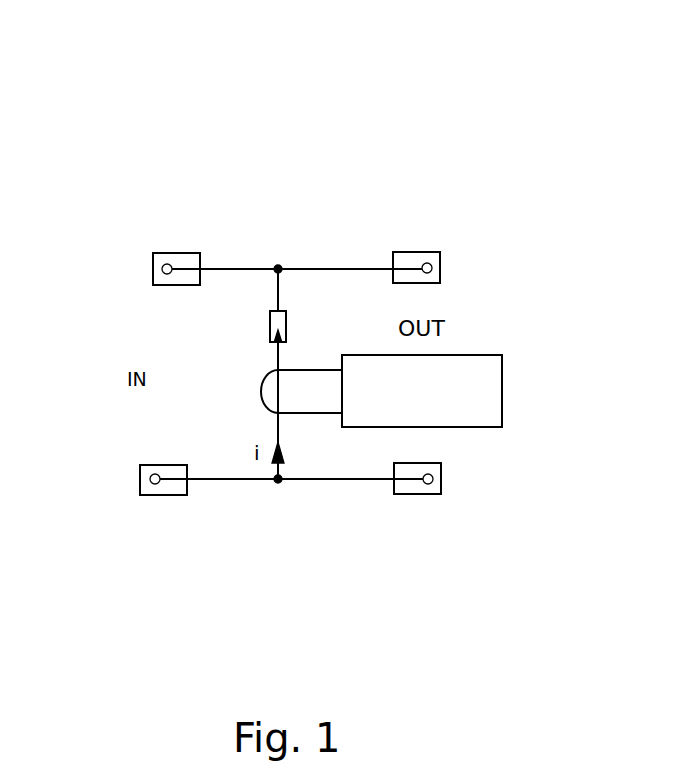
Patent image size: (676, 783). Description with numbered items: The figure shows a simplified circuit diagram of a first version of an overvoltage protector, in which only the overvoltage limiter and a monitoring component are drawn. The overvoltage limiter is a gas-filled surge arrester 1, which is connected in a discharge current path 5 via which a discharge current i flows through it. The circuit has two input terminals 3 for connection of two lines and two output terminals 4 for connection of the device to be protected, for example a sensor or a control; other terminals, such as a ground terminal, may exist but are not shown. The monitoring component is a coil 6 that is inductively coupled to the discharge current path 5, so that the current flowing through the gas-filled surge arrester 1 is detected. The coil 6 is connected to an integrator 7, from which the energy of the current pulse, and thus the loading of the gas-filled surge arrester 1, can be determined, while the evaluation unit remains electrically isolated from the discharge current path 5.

The gas-filled surge arrester 1 is at (272, 322).
The input terminals 3 is at (165, 253).
The output terminals 4 is at (430, 265).
The discharge current path 5 is at (233, 229).
The coil 6 is at (263, 402).
The integrator 7 is at (422, 391).